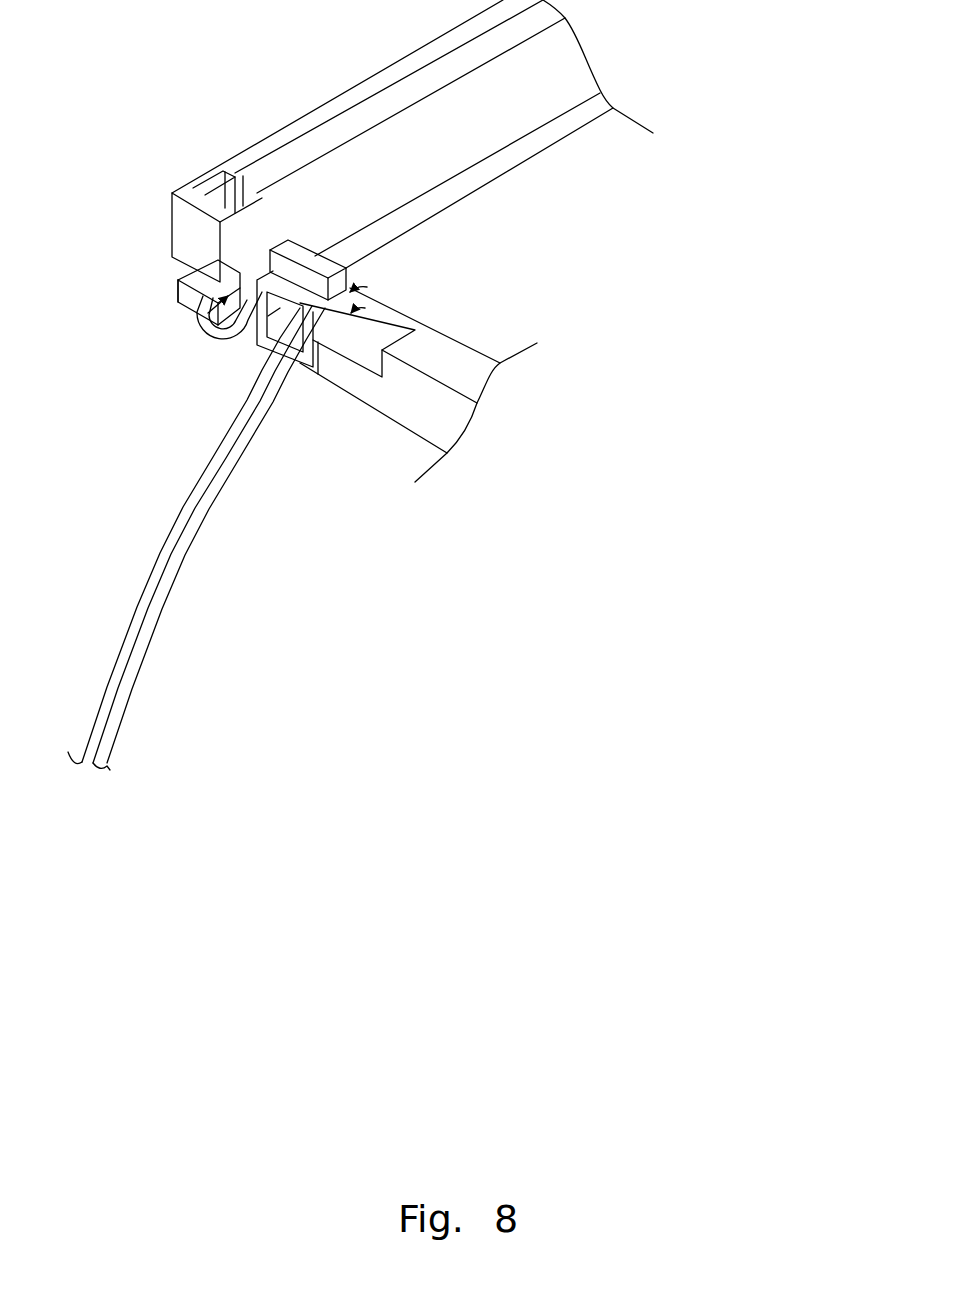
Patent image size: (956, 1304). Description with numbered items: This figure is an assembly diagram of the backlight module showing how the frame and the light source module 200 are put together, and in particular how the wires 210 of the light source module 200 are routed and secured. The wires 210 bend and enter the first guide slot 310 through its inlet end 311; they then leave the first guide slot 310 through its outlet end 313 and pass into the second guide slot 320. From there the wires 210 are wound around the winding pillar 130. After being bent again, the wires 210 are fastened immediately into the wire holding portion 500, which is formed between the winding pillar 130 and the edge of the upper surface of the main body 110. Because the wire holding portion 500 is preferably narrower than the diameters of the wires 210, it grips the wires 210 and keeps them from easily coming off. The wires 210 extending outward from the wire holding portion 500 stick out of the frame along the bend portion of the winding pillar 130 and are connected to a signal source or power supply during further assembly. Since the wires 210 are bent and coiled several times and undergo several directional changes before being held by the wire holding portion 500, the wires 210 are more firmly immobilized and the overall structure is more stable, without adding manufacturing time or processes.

The main body 110 is at (535, 102).
The winding pillar 130 is at (276, 312).
The light source module 200 is at (187, 292).
The wires 210 is at (170, 550).
The first guide slot 310 is at (222, 280).
The inlet end 311 is at (194, 310).
The outlet end 313 is at (257, 236).
The second guide slot 320 is at (370, 282).
The wire holding portion 500 is at (352, 310).